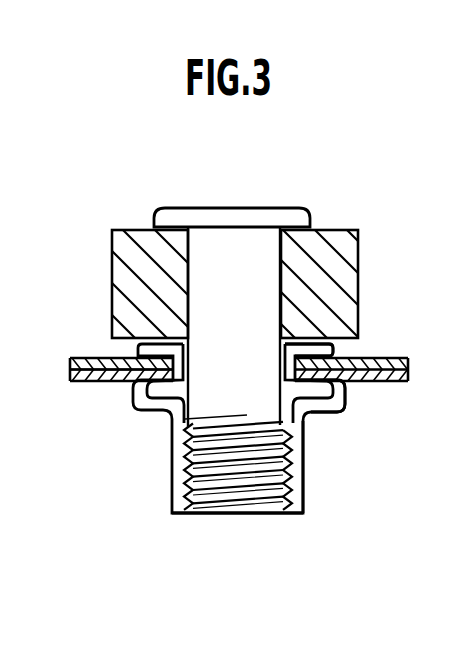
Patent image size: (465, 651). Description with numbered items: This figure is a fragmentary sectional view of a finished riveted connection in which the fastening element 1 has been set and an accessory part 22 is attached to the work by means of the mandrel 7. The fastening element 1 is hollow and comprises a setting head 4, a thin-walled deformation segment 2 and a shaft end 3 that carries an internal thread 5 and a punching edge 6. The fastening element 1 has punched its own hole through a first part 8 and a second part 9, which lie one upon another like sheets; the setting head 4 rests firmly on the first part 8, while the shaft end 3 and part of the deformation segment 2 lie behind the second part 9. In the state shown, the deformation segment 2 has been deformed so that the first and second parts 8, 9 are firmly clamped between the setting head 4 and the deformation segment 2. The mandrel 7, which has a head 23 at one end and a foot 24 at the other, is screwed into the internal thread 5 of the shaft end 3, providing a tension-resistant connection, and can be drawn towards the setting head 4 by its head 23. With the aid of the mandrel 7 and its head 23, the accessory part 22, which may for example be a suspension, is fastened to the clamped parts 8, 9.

The fastening element 1 is at (152, 424).
The deformation segment 2 is at (378, 385).
The shaft end 3 is at (378, 428).
The setting head 4 is at (309, 349).
The internal thread 5 is at (288, 482).
The punching edge 6 is at (173, 513).
The mandrel 7 is at (217, 248).
The first part 8 is at (387, 358).
The second part 9 is at (93, 383).
The accessory part 22 is at (145, 284).
The head 23 is at (263, 220).
The foot 24 is at (254, 495).